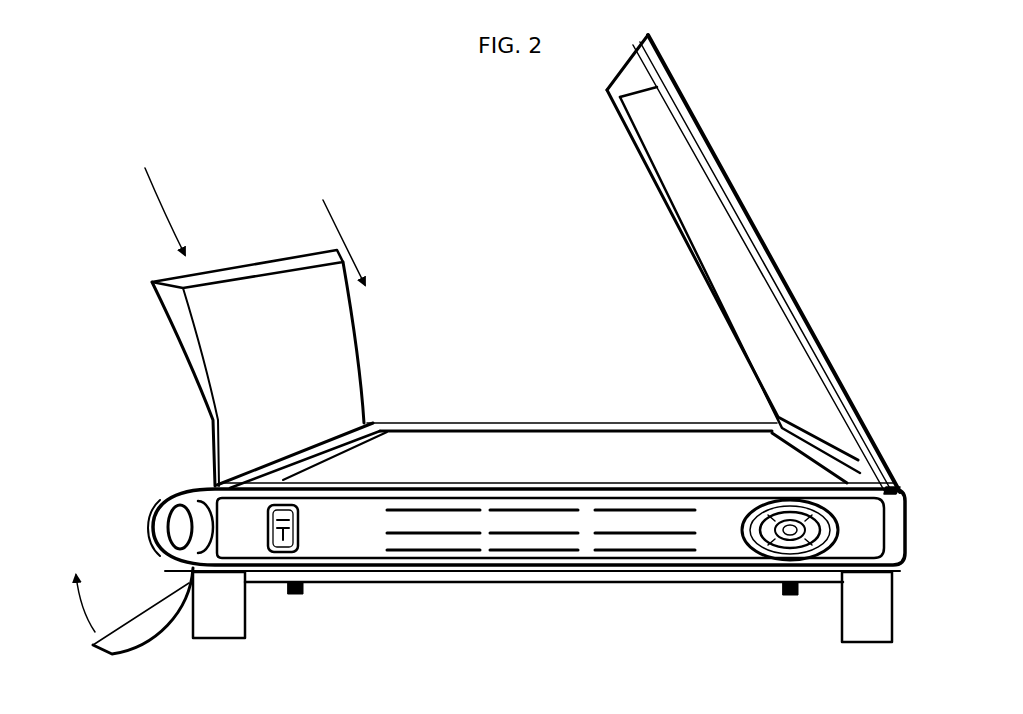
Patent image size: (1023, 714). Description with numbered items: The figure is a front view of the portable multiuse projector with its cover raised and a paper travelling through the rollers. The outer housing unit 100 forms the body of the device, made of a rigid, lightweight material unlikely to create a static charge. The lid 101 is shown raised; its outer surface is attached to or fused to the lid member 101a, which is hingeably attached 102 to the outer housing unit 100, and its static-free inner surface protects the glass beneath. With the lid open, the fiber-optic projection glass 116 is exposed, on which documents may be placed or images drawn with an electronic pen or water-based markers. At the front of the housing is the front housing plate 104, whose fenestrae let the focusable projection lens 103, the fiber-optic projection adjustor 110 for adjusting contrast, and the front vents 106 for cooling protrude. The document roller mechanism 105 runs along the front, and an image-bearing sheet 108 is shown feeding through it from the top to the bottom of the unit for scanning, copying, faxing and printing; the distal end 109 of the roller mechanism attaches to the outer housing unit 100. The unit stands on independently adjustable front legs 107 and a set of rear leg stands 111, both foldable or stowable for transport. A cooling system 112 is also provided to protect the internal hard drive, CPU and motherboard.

The outer housing unit 100 is at (895, 535).
The lid 101 is at (697, 117).
The lid member 101a is at (765, 232).
The hinge attachment 102 is at (897, 485).
The projection lens 103 is at (818, 503).
The front housing plate 104 is at (707, 500).
The document roller mechanism 105 is at (197, 470).
The front vents 106 is at (427, 550).
The front legs 107 is at (233, 637).
The image-bearing sheet 108 is at (263, 267).
The distal end 109 is at (157, 513).
The fiber-optic projection adjustor 110 is at (300, 512).
The rear leg stands 111 is at (303, 588).
The cooling system 112 is at (658, 583).
The fiber-optic projection glass 116 is at (712, 437).